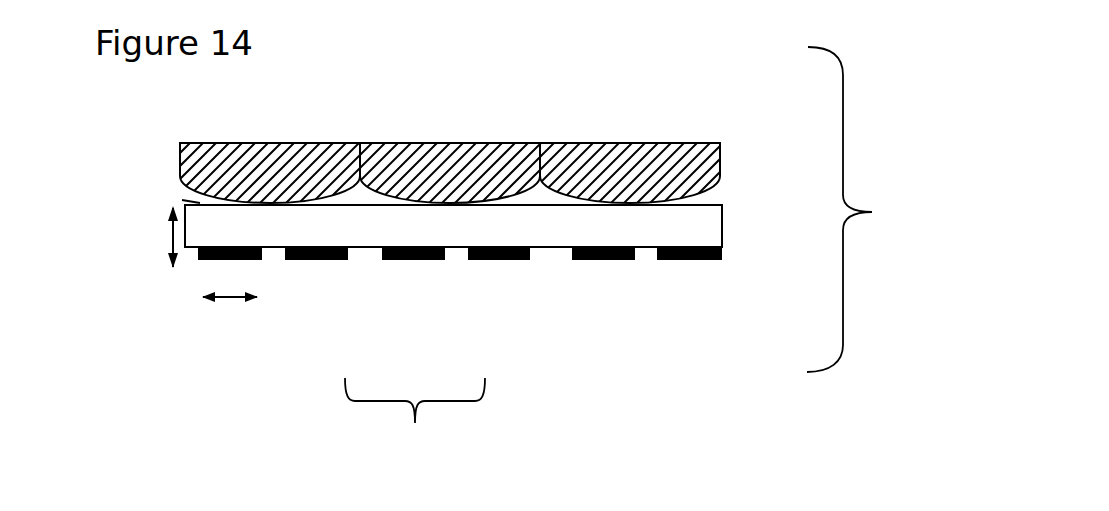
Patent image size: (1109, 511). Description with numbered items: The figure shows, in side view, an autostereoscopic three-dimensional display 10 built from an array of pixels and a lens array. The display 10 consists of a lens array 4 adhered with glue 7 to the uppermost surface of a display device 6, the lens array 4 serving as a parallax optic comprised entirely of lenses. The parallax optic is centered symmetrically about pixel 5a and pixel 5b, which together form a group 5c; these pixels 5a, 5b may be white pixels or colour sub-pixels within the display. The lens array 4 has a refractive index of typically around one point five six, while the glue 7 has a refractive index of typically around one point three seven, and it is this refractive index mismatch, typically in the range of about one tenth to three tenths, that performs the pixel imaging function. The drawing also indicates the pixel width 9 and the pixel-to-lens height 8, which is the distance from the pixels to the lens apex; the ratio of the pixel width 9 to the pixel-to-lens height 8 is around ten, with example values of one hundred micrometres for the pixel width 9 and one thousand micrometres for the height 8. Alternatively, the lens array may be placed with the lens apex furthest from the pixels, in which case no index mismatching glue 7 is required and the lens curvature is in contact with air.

The lens array 4 is at (720, 150).
The pixel 5a is at (222, 261).
The pixel 5b is at (310, 262).
The group 5c is at (415, 430).
The display device 6 is at (700, 228).
The glue 7 is at (190, 193).
The pixel-to-lens height 8 is at (173, 228).
The pixel width 9 is at (227, 300).
The autostereoscopic 3D display 10 is at (869, 209).